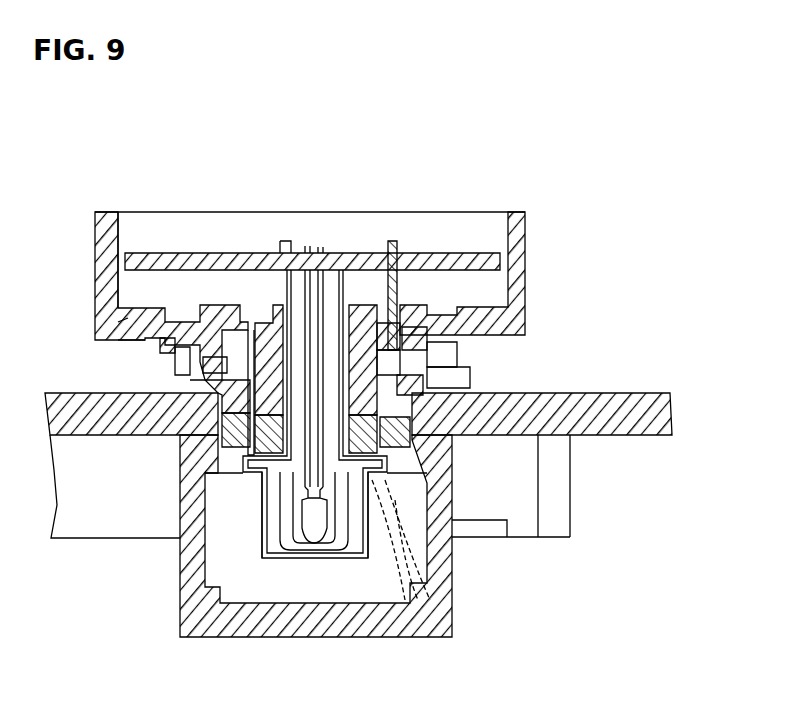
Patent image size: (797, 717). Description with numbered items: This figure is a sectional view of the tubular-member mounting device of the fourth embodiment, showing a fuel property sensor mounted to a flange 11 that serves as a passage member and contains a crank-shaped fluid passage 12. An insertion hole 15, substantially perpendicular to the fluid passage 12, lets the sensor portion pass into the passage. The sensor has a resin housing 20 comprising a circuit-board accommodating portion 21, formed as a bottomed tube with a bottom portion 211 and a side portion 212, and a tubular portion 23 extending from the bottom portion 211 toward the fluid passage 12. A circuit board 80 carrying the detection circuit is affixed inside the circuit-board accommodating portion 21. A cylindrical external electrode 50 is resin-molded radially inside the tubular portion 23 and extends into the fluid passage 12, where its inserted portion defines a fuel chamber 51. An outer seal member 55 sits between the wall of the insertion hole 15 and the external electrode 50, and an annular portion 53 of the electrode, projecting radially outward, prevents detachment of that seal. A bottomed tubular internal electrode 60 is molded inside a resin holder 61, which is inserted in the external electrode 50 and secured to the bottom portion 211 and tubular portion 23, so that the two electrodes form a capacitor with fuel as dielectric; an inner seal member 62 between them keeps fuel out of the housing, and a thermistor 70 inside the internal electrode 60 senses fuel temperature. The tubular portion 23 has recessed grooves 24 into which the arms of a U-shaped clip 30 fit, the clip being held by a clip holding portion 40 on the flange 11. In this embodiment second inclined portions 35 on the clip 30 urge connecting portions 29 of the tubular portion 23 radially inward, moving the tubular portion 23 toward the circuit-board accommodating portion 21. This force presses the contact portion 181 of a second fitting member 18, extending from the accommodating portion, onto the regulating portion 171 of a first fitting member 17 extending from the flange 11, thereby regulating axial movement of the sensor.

The flange 11 is at (618, 398).
The fluid passage 12 is at (200, 578).
The insertion hole 15 is at (238, 478).
The first fitting member 17 is at (215, 384).
The second fitting member 18 is at (160, 346).
The housing 20 is at (433, 212).
The circuit-board accommodating portion 21 is at (158, 232).
The tubular portion 23 is at (458, 347).
The recessed groove 24 is at (440, 380).
The connecting portion 29 is at (425, 370).
The clip 30 is at (222, 437).
The second inclined portion 35 is at (472, 358).
The clip holding portion 40 is at (125, 321).
The external electrode 50 is at (366, 558).
The fuel chamber 51 is at (276, 545).
The annular portion 53 is at (445, 592).
The outer seal member 55 is at (452, 552).
The internal electrode 60 is at (330, 550).
The holder 61 is at (363, 318).
The inner seal member 62 is at (400, 575).
The thermistor 70 is at (314, 543).
The circuit board 80 is at (247, 252).
The regulating portion 171 is at (203, 368).
The contact portion 181 is at (175, 357).
The bottom portion 211 is at (118, 343).
The side portion 212 is at (100, 273).